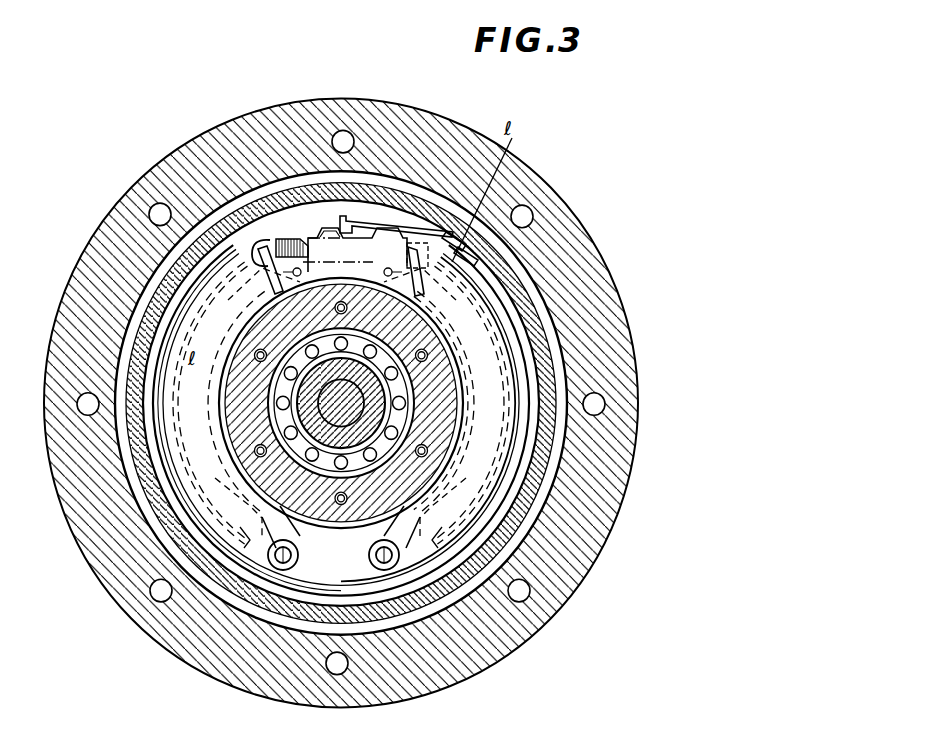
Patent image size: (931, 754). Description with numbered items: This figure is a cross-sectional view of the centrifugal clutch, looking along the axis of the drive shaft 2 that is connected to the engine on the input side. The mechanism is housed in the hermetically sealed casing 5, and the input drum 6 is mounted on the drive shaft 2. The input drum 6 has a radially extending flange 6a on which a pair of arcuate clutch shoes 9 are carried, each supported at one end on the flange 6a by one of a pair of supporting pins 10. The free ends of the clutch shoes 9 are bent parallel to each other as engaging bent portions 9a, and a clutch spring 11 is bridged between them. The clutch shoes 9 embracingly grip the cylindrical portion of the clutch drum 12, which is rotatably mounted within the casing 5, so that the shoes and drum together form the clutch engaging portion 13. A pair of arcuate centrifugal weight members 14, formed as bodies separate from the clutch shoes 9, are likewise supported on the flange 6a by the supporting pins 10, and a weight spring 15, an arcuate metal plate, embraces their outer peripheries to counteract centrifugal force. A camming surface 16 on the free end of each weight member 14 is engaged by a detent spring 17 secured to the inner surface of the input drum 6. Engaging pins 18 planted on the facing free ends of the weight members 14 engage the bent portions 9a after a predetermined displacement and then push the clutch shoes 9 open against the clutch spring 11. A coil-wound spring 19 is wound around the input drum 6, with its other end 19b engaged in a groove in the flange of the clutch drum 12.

The drive shaft 2 is at (328, 437).
The casing 5 is at (570, 207).
The input drum 6 is at (517, 292).
The flange 6a is at (362, 600).
The clutch shoes 9 is at (235, 482).
The engaging bent portions 9a is at (205, 212).
The supporting pins 10 is at (277, 573).
The clutch spring 11 is at (262, 262).
The clutch drum 12 is at (260, 520).
The clutch engaging portion 13 is at (66, 596).
The centrifugal weight members 14 is at (260, 505).
The weight spring 15 is at (308, 602).
The camming surface 16 is at (318, 235).
The detent spring 17 is at (420, 226).
The engaging pins 18 is at (290, 240).
The coil-wound spring 19 is at (165, 268).
The other end of coil-wound spring 19b is at (332, 228).